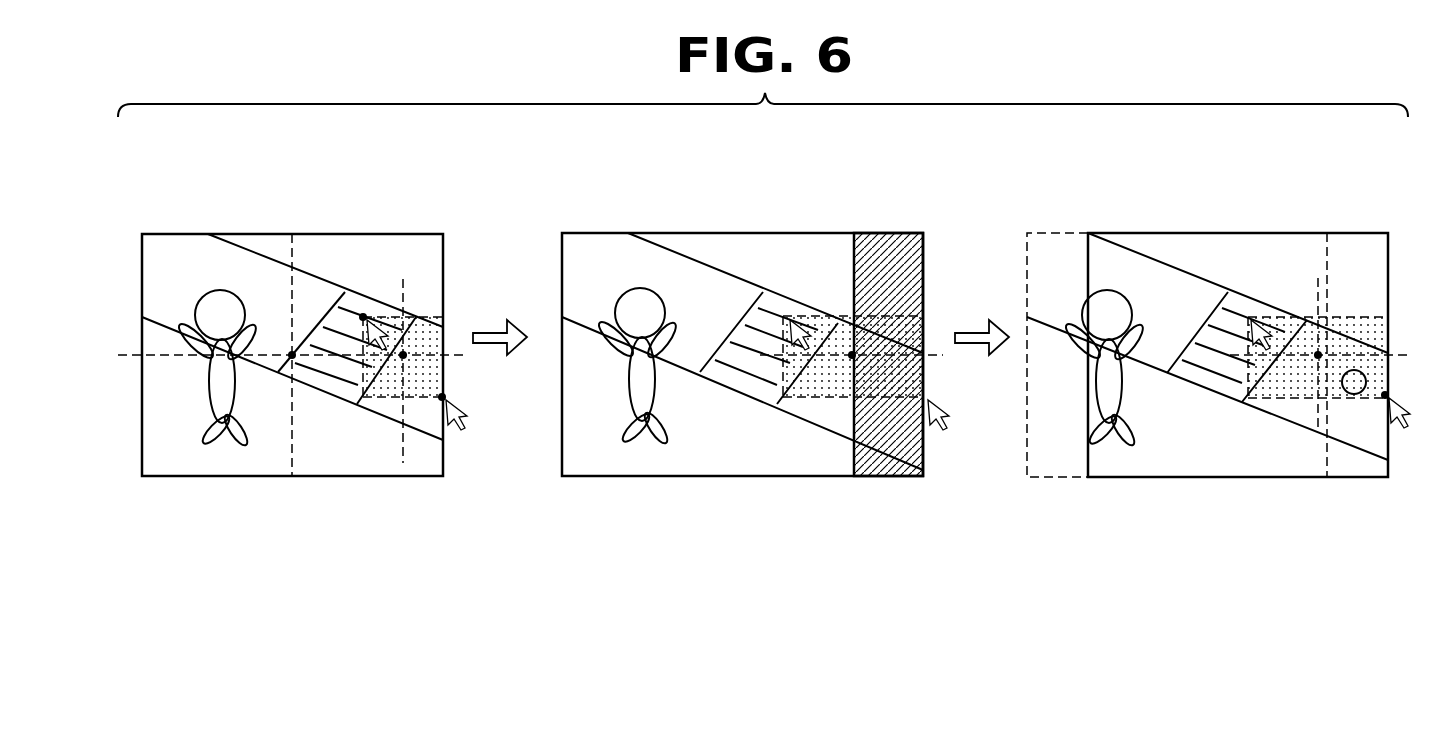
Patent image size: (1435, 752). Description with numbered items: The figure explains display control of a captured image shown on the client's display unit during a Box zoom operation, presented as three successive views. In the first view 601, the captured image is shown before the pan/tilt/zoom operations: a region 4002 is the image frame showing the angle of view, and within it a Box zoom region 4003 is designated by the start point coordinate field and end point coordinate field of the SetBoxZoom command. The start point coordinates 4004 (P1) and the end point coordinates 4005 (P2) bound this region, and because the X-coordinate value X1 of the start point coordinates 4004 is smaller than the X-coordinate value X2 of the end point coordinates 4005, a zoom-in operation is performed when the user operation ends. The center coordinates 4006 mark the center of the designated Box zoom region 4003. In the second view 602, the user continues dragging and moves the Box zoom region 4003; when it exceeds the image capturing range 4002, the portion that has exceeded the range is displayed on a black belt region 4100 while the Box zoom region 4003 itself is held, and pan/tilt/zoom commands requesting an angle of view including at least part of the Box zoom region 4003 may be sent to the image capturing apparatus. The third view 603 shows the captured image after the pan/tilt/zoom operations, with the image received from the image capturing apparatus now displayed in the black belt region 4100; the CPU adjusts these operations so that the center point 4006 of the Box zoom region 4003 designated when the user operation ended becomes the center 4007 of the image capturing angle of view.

The view of captured image before pan/tilt/zoom operations 601 is at (340, 379).
The view of captured image during moving operation 602 is at (755, 396).
The view of captured image after pan/tilt/zoom operations 603 is at (1210, 546).
The region (image frame) 4002 is at (446, 238).
The Box zoom region 4003 is at (376, 418).
The start point coordinates 4004 is at (363, 314).
The end point coordinates 4005 is at (445, 399).
The center coordinates of Box zoom region 4006 is at (406, 357).
The center of image capturing angle of view 4007 is at (275, 376).
The black belt region 4100 is at (890, 233).